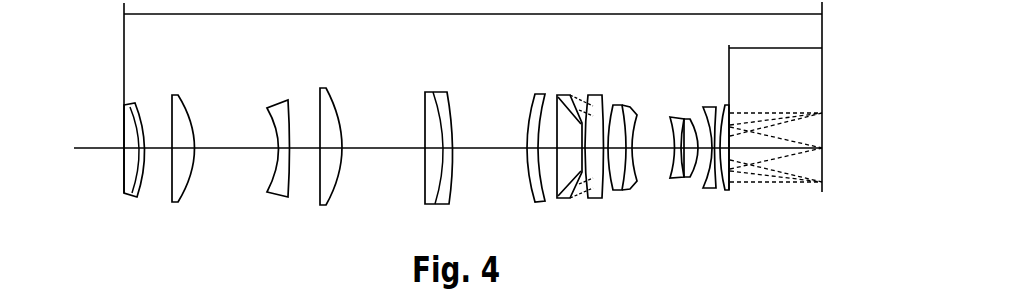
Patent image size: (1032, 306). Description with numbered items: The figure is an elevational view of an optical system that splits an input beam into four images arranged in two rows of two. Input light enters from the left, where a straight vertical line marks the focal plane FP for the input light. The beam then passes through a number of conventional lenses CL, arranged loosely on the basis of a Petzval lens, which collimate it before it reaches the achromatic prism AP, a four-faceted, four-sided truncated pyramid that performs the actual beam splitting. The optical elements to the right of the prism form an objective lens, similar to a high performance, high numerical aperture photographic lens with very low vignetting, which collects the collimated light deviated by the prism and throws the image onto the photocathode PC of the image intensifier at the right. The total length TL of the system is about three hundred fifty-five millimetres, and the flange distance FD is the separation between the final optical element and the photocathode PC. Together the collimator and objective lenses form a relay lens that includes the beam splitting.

The focal plane FP is at (122, 187).
The conventional lenses CL is at (267, 198).
The achromatic prism AP is at (567, 199).
The total length TL is at (470, 14).
The flange distance FD is at (778, 48).
The photocathode PC is at (822, 189).